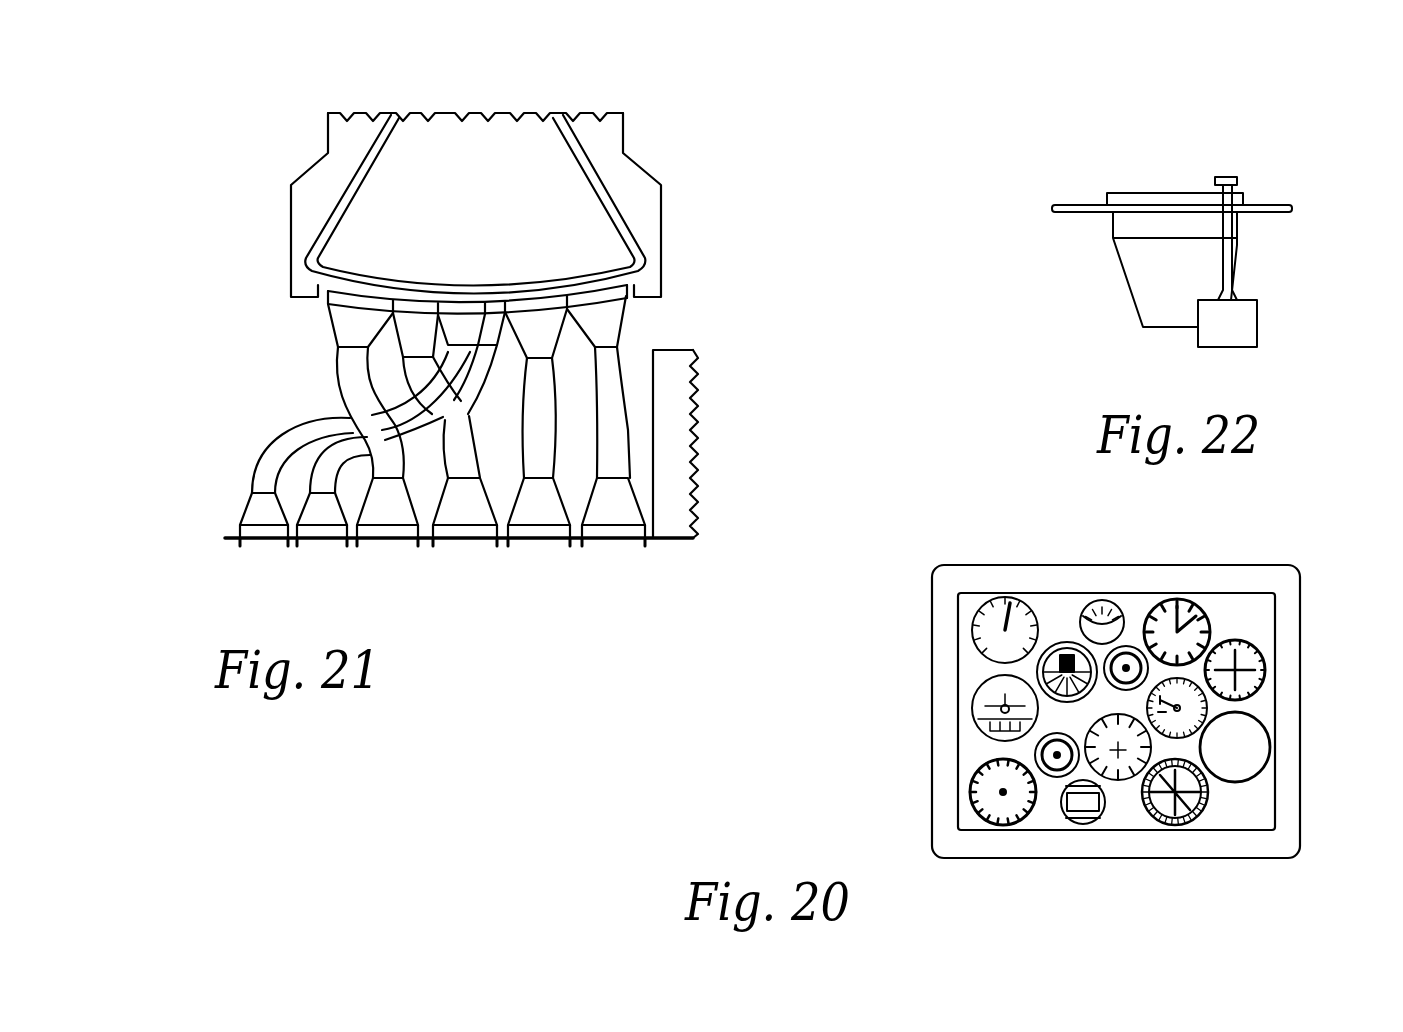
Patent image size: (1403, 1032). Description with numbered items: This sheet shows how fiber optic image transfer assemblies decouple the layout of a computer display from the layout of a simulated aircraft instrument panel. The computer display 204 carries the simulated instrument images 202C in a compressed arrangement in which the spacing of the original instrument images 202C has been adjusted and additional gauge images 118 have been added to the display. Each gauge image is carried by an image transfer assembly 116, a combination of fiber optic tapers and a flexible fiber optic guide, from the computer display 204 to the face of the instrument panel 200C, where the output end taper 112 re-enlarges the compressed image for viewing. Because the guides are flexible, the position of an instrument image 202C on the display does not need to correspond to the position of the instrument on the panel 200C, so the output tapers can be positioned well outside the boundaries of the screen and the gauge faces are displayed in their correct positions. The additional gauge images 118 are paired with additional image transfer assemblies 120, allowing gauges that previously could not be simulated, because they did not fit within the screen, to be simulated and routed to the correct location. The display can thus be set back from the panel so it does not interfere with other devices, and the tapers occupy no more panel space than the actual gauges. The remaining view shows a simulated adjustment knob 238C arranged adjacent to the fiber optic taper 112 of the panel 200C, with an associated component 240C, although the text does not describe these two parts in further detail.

In FIG. 21, the computer display 204 is at (302, 173).
In FIG. 20, the computer display 204 is at (930, 698).
In FIG. 21, the image transfer assembly 116 is at (333, 360).
In FIG. 21, the additional image transfer assembly 120 is at (282, 430).
In FIG. 21, the instrument panel 200C is at (677, 541).
In FIG. 22, the instrument panel 200C is at (1077, 200).
In FIG. 22, the mounting shaft 238C is at (1240, 175).
In FIG. 22, the output end taper 112 is at (1123, 277).
In FIG. 22, the connector box 240C is at (1262, 300).
In FIG. 20, the instrument image 202C is at (973, 628).
In FIG. 20, the additional gauge image 118 is at (1130, 638).